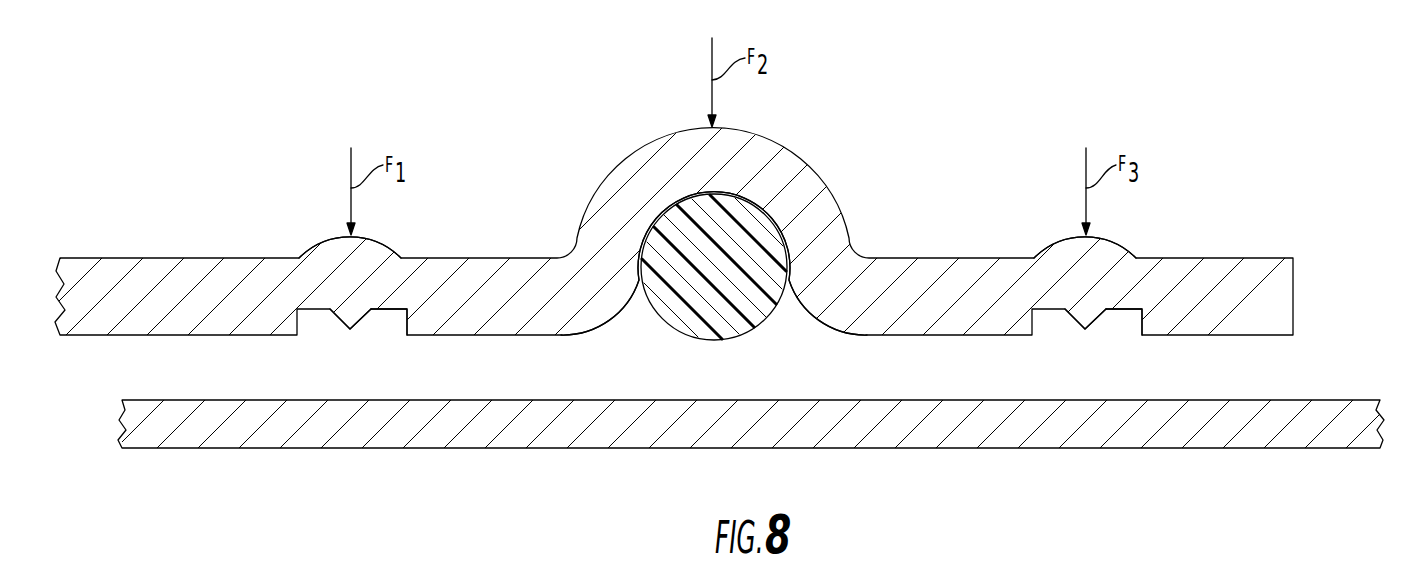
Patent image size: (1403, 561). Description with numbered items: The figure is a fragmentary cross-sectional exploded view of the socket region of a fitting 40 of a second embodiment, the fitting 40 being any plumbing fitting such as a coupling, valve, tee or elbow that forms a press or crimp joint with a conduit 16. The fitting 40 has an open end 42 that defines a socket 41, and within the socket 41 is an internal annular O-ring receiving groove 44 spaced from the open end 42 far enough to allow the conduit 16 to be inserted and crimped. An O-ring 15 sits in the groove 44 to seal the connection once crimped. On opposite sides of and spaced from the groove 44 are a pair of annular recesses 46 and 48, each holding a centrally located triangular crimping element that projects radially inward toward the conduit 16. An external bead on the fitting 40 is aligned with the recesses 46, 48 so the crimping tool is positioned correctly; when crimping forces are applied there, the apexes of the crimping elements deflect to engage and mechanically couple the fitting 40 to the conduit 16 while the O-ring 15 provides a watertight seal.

The O-ring 15 is at (733, 233).
The conduit 16 is at (858, 448).
The fitting 40 is at (924, 159).
The socket 41 is at (1286, 366).
The open end 42 is at (1278, 345).
The internal annular O-ring receiving groove 44 is at (798, 292).
The annular recess 46 is at (383, 311).
The annular recess 48 is at (1118, 311).